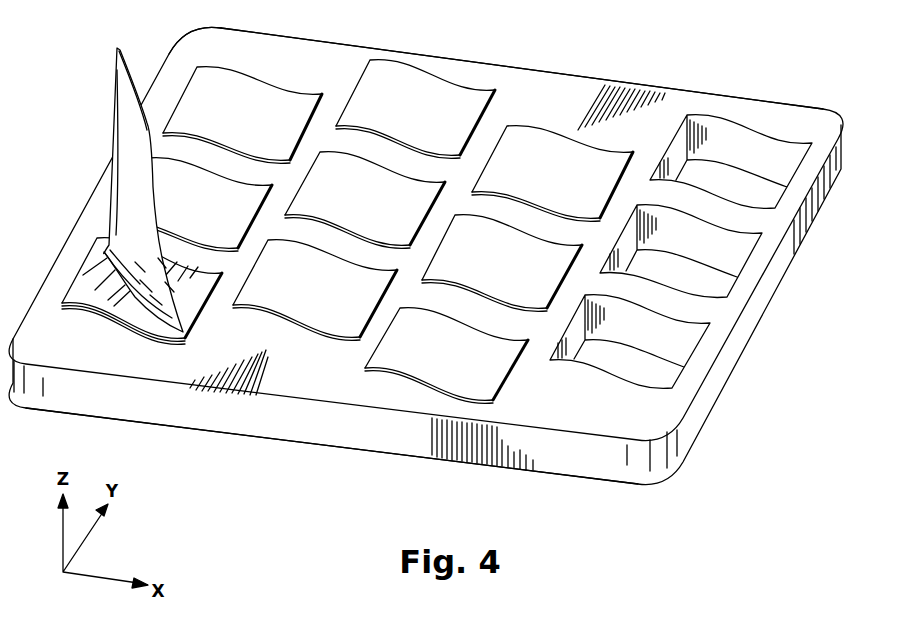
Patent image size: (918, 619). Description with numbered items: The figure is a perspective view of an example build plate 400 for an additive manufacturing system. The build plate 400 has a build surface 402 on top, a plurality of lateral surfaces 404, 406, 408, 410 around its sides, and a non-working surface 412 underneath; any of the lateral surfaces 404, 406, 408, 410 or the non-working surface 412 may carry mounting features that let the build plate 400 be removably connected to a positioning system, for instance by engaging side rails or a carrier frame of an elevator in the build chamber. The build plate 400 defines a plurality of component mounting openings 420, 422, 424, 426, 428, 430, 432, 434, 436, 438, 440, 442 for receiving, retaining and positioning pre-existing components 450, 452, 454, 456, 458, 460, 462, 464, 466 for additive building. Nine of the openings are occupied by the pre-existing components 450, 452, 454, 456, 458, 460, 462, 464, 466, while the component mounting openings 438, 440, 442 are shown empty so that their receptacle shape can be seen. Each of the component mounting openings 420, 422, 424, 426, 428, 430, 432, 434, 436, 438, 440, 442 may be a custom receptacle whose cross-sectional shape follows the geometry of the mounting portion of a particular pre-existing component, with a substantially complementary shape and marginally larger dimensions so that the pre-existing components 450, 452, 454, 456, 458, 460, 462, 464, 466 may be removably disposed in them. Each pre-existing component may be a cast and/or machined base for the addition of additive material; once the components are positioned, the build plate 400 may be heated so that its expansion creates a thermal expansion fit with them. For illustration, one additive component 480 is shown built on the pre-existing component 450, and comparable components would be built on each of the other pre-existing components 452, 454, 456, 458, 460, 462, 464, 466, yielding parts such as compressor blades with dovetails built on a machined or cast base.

The build plate 400 is at (293, 390).
The build surface 402 is at (538, 95).
The lateral surface 404 is at (155, 403).
The lateral surface 406 is at (732, 348).
The lateral surface 408 is at (405, 52).
The lateral surface 410 is at (163, 67).
The non-working surface 412 is at (410, 453).
The component mounting opening 420 is at (146, 300).
The component mounting opening 422 is at (180, 240).
The component mounting opening 424 is at (185, 133).
The component mounting opening 426 is at (260, 308).
The component mounting opening 428 is at (303, 220).
The component mounting opening 430 is at (358, 130).
The component mounting opening 432 is at (428, 385).
The component mounting opening 434 is at (503, 305).
The component mounting opening 436 is at (557, 212).
The component mounting opening 438 is at (687, 367).
The component mounting opening 440 is at (740, 280).
The component mounting opening 442 is at (787, 190).
The pre-existing component 450 is at (188, 307).
The pre-existing component 452 is at (204, 215).
The pre-existing component 454 is at (242, 107).
The pre-existing component 456 is at (315, 308).
The pre-existing component 458 is at (365, 211).
The pre-existing component 460 is at (415, 120).
The pre-existing component 462 is at (426, 374).
The pre-existing component 464 is at (502, 275).
The pre-existing component 466 is at (552, 185).
The additive component 480 is at (125, 183).